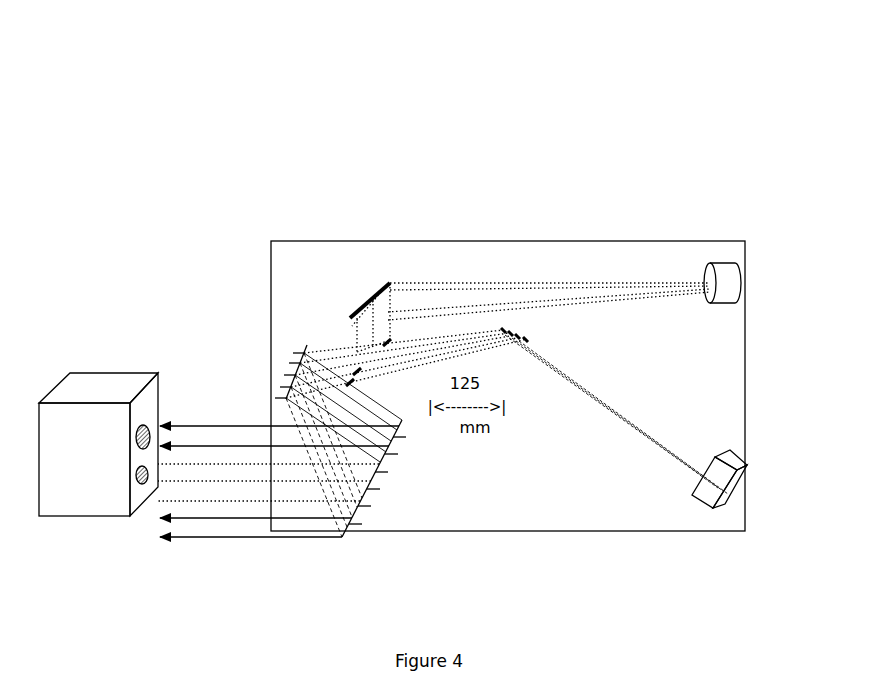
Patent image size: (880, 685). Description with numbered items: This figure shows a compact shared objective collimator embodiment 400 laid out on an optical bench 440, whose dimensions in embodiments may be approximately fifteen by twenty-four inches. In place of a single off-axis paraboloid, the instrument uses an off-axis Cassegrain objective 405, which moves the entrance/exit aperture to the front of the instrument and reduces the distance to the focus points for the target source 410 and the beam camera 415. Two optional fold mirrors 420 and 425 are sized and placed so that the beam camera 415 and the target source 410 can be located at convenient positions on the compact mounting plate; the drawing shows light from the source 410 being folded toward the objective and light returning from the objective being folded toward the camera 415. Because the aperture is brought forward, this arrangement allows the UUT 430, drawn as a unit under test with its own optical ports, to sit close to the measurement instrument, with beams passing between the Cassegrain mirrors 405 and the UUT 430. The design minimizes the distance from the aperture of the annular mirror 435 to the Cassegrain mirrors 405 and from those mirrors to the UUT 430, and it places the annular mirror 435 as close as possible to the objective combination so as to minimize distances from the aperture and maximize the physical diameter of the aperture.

The compact shared objective collimator embodiment 400 is at (42, 42).
The off-axis Cassegrain objective 405 is at (287, 367).
The target source 410 is at (728, 262).
The beam camera 415 is at (712, 507).
The fold mirror 420 is at (357, 286).
The fold mirror 425 is at (507, 325).
The UUT 430 is at (100, 372).
The annular mirror 435 is at (350, 372).
The optical bench 440 is at (632, 536).